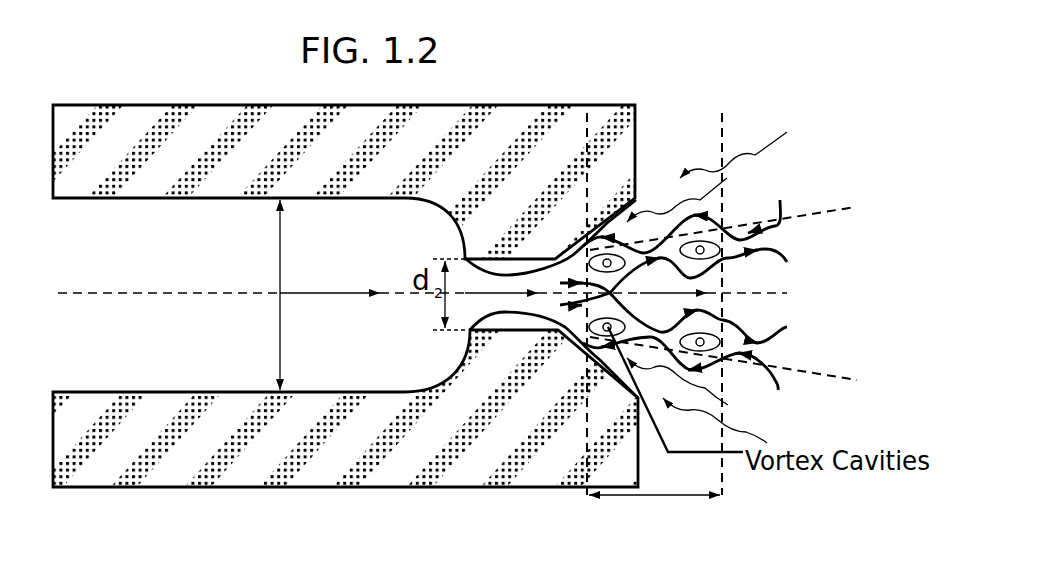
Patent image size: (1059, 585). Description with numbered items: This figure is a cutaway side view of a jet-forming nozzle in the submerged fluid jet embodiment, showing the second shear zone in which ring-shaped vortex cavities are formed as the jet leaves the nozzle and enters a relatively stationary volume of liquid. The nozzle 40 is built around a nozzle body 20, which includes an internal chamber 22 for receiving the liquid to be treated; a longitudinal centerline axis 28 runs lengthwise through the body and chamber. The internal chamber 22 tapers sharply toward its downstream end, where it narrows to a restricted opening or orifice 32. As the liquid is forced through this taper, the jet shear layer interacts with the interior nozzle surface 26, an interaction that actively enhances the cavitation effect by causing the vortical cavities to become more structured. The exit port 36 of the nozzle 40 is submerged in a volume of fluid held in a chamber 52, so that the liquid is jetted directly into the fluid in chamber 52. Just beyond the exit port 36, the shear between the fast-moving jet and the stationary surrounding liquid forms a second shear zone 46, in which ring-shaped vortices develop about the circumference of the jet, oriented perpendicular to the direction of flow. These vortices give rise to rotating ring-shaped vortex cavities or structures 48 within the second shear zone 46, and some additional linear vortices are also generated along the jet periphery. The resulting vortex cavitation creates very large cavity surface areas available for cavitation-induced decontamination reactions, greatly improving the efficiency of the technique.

The nozzle body 20 is at (186, 102).
The internal chamber 22 is at (348, 256).
The interior nozzle surface 26 is at (158, 203).
The longitudinal centerline axis 28 is at (142, 293).
The restricted opening or orifice 32 is at (472, 330).
The exit port 36 is at (636, 200).
The nozzle 40 is at (366, 494).
The second shear zone 46 is at (625, 495).
The ring-shaped vortex cavities or structures 48 is at (700, 250).
The chamber 52 is at (642, 233).